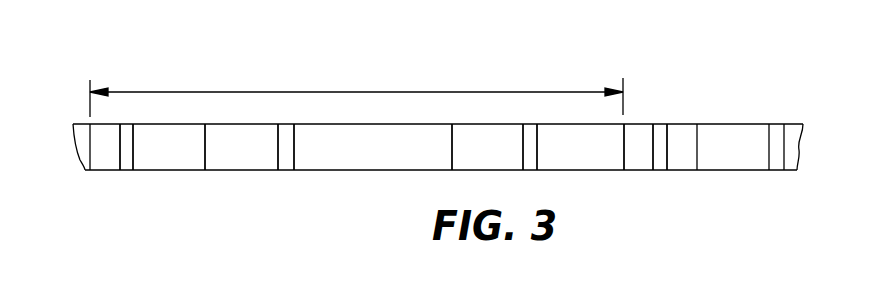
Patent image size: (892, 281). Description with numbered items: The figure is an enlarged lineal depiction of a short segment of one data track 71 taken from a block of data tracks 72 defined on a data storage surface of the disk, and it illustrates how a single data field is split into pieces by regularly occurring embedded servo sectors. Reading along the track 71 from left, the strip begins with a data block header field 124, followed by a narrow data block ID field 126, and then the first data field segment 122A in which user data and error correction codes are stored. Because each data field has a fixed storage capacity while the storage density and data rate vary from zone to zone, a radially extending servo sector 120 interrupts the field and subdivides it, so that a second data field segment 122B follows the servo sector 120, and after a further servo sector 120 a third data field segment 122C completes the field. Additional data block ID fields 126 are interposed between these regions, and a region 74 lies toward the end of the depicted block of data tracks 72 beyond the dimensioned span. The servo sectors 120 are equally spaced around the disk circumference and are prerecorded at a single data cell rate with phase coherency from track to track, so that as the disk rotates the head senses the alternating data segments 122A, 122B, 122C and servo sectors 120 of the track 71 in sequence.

The data track 71 is at (76, 165).
The block of data tracks 72 is at (417, 90).
The end region 74 is at (639, 132).
The embedded servo sector 120 is at (237, 135).
The data field segment 122A is at (170, 132).
The data field segment 122B is at (368, 138).
The data field segment 122C is at (580, 138).
The data block header field 124 is at (106, 160).
The data block ID field 126 is at (126, 123).